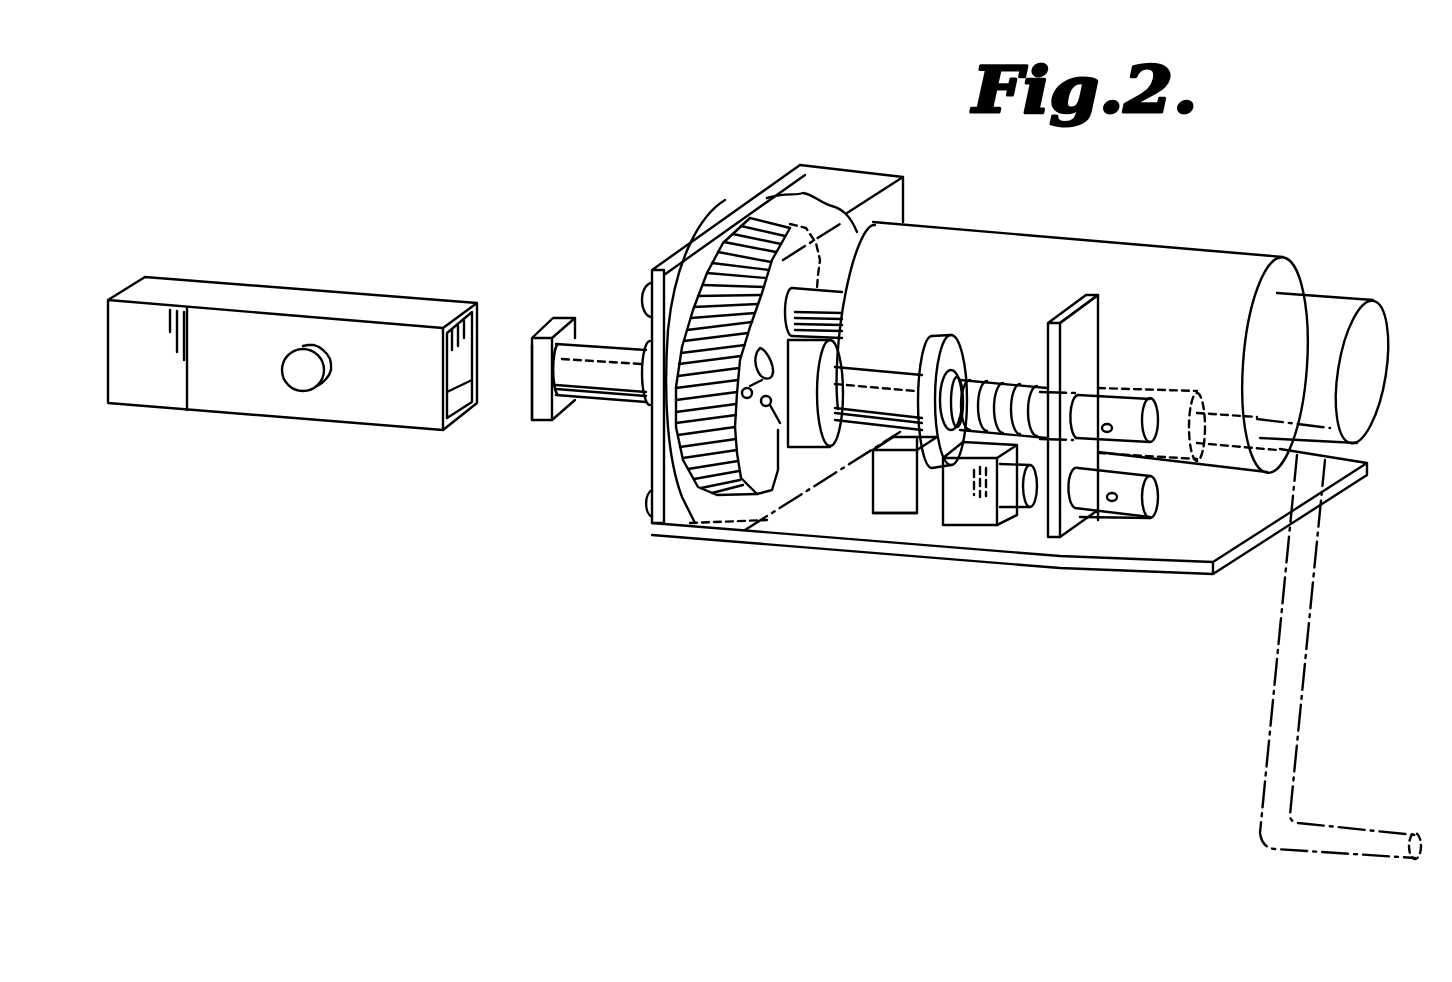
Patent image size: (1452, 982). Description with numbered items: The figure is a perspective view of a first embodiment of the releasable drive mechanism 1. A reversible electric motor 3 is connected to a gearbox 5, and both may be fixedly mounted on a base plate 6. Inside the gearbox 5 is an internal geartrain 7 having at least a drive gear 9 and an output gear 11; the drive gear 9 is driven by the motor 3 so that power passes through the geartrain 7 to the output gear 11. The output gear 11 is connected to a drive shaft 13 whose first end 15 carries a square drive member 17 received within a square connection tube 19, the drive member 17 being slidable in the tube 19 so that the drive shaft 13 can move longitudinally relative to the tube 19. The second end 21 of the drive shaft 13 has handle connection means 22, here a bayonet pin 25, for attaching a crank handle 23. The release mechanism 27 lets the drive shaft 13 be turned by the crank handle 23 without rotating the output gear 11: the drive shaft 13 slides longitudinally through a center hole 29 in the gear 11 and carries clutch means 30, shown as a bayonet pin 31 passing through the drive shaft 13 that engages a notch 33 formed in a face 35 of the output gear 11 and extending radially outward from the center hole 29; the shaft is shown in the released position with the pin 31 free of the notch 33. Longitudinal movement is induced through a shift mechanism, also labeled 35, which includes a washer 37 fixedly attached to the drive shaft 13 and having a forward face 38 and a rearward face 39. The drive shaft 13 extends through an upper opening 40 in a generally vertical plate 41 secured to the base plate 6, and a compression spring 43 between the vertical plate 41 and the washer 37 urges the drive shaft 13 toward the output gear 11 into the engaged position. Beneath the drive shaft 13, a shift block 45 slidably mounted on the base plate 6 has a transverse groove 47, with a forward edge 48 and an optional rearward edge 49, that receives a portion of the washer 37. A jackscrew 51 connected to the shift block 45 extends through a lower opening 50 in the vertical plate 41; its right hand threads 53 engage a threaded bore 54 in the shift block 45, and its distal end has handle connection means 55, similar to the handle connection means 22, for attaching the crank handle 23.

The drive mechanism 1 is at (678, 169).
The reversible electric motor 3 is at (962, 226).
The gearbox 5 is at (877, 167).
The base plate 6 is at (1372, 463).
The internal geartrain 7 is at (728, 255).
The drive gear 9 is at (783, 226).
The output gear 11 is at (668, 300).
The drive shaft 13 is at (615, 403).
The first end 15 is at (527, 357).
The square drive member 17 is at (550, 328).
The square connection tube 19 is at (395, 428).
The second end 21 is at (1163, 405).
The handle connection means 22 is at (1112, 430).
The crank handle 23 is at (1320, 548).
The bayonet pin 25 is at (1114, 400).
The release mechanism 27 is at (1025, 526).
The center hole 29 is at (765, 347).
The clutch means 30 is at (747, 423).
The bayonet pin 31 is at (780, 470).
The notch 33 is at (745, 405).
The face of output gear 35 is at (768, 482).
The washer 37 is at (950, 345).
The forward face 38 is at (922, 355).
The rearward face 39 is at (955, 360).
The upper opening 40 is at (1080, 400).
The vertical plate 41 is at (1097, 295).
The compression spring 43 is at (970, 442).
The shift block 45 is at (890, 514).
The transverse groove 47 is at (910, 480).
The forward edge 48 is at (915, 471).
The rearward edge 49 is at (933, 490).
The lower opening 50 is at (1073, 518).
The jackscrew 51 is at (1110, 518).
The right hand threads 53 is at (980, 493).
The threaded bore 54 is at (1020, 500).
The handle connection means 55 is at (1080, 490).